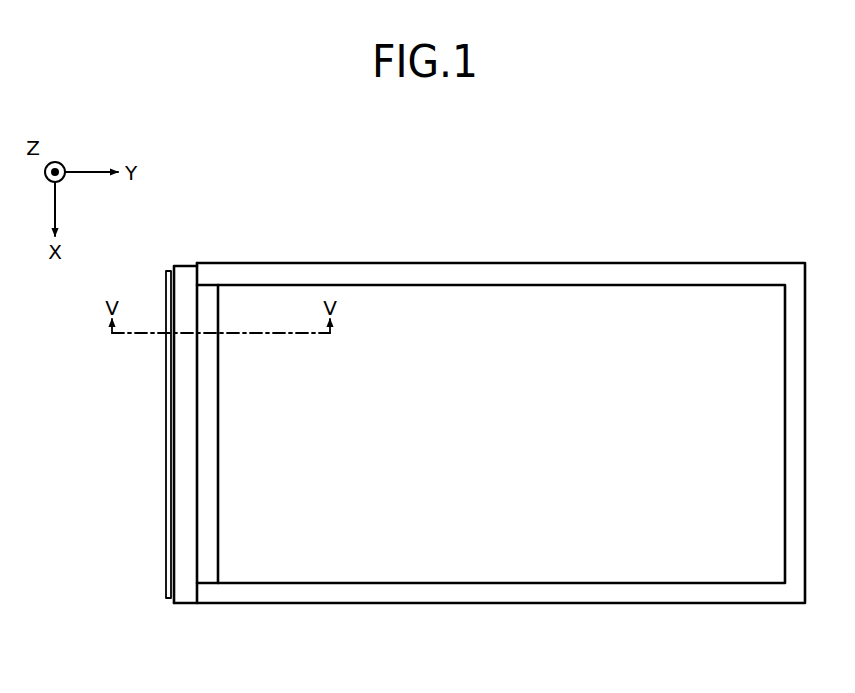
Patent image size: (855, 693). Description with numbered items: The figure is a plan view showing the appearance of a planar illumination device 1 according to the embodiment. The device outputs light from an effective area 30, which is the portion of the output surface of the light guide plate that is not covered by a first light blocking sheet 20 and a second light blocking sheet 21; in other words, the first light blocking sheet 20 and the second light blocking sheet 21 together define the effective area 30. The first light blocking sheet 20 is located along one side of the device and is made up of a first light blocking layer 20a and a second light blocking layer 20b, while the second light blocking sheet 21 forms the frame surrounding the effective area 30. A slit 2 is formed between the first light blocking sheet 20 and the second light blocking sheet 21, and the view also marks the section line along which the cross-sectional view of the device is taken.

The planar illumination device 1 is at (472, 382).
The slit 2 is at (757, 240).
The first light blocking sheet 20 is at (195, 382).
The first light blocking layer 20a is at (166, 403).
The second light blocking layer 20b is at (187, 266).
The second light blocking sheet 21 is at (433, 275).
The effective area 30 is at (472, 308).